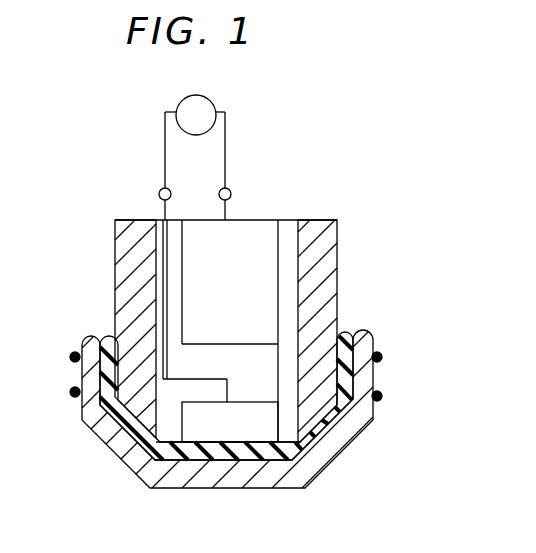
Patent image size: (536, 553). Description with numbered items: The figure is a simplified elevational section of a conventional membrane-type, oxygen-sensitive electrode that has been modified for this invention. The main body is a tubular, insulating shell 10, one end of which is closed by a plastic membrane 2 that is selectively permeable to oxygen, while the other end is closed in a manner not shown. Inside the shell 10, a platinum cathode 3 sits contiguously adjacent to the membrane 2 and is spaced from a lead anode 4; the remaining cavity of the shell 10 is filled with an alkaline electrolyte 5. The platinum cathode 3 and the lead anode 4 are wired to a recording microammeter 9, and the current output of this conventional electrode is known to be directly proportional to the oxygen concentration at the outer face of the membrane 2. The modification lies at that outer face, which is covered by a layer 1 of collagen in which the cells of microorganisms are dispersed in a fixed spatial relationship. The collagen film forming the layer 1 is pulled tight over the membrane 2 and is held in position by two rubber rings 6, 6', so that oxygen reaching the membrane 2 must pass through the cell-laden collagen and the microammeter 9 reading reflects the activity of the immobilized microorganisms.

The layer of collagen 1 is at (247, 480).
The plastic membrane 2 is at (188, 462).
The platinum cathode 3 is at (255, 407).
The lead anode 4 is at (252, 235).
The alkaline electrolyte 5 is at (282, 360).
The rubber ring 6 is at (243, 348).
The rubber ring 6' is at (249, 391).
The recording microammeter 9 is at (212, 100).
The tubular insulating shell 10 is at (337, 250).